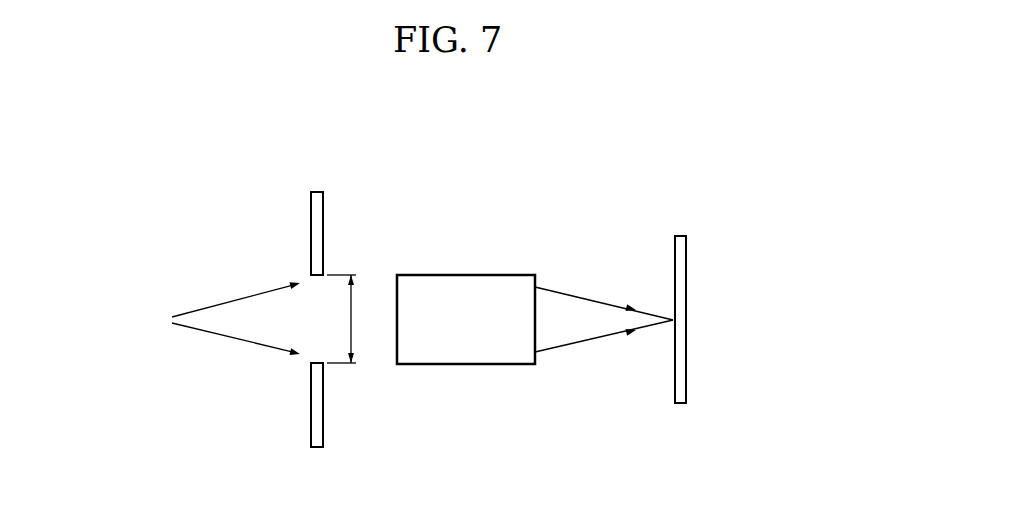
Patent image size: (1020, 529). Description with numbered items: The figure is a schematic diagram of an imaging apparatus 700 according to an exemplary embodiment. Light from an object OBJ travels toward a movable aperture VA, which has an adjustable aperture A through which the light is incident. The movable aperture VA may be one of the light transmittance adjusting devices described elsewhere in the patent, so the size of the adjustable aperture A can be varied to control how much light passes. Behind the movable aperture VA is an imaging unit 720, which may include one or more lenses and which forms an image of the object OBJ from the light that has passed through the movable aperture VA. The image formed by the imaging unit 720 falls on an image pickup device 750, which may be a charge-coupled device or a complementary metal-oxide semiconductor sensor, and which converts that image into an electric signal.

The imaging apparatus 700 is at (722, 174).
The imaging unit 720 is at (467, 278).
The image pickup device 750 is at (683, 235).
The movable aperture VA is at (318, 173).
The adjustable aperture A is at (349, 319).
The object OBJ is at (210, 318).